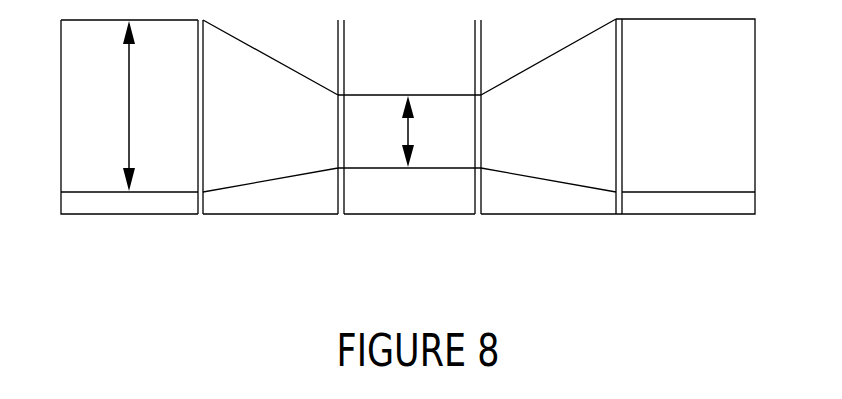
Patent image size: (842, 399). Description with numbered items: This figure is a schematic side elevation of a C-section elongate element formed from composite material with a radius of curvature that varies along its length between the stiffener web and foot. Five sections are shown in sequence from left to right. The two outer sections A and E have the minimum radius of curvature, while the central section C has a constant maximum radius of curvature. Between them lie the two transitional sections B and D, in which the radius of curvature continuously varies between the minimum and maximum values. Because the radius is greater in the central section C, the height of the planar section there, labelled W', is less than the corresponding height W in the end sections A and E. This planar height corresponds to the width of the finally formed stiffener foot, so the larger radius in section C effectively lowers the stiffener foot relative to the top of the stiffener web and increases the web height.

The section A is at (128, 215).
The transitional section B is at (268, 215).
The central section C is at (408, 215).
The transitional section D is at (546, 215).
The section E is at (686, 215).
The width of stiffener foot in minimum-radius sections W is at (117, 106).
The width of finally formed stiffener foot W' is at (425, 131).